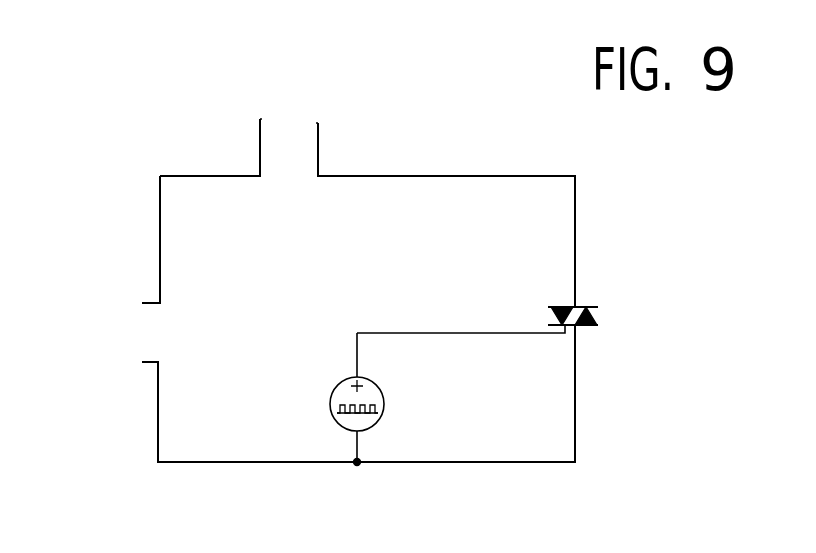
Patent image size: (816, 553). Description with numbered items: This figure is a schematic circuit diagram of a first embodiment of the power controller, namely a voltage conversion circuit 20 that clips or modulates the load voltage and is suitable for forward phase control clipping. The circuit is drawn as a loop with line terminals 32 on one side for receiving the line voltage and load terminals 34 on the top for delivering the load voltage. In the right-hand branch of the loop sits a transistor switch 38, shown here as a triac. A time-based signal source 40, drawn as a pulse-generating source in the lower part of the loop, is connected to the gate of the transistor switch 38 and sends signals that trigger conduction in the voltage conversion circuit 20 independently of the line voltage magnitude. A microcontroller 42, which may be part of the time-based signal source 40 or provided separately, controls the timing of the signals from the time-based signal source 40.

The voltage conversion circuit 20 is at (417, 142).
The line terminals 32 is at (140, 360).
The load terminals 34 is at (317, 125).
The transistor switch 38 is at (600, 305).
The time-based signal source 40 is at (333, 409).
The microcontroller 42 is at (363, 432).